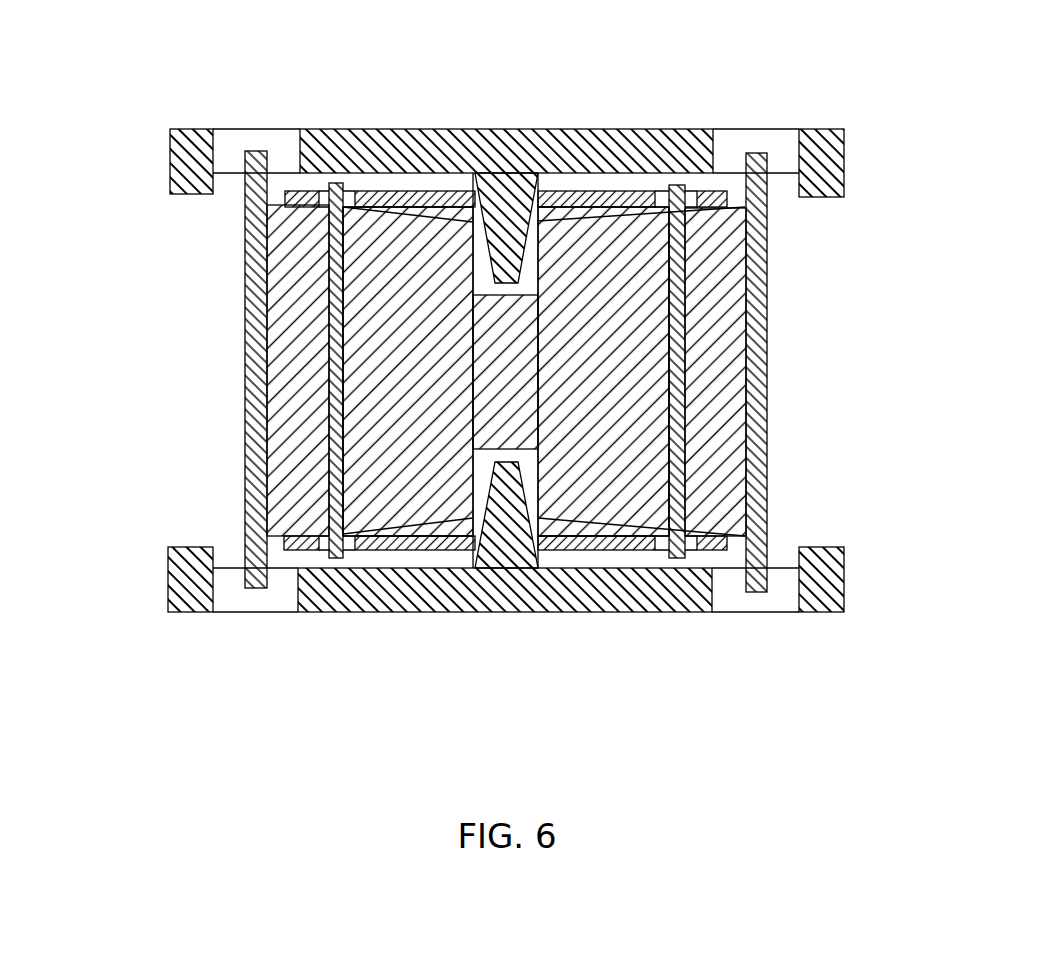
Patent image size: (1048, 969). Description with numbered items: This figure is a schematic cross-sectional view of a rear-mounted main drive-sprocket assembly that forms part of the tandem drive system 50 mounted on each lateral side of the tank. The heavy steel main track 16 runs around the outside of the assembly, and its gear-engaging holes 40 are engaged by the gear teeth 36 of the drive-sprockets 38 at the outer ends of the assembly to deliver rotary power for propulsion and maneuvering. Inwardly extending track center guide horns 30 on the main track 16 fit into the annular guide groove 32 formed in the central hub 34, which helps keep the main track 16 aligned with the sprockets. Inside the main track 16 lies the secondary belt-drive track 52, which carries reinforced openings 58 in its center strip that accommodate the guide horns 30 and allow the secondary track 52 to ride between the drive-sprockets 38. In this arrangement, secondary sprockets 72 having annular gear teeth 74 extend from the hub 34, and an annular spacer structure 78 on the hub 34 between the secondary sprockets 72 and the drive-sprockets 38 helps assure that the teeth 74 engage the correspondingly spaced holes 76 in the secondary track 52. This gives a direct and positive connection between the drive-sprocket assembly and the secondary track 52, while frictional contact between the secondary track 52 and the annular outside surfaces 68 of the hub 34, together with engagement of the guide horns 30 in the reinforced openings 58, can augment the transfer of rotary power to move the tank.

The main track 16 is at (460, 129).
The track center guide horns 30 is at (540, 262).
The annular guide groove 32 is at (545, 270).
The hub 34 is at (420, 398).
The gear teeth 36 is at (243, 158).
The drive-sprockets 38 is at (245, 345).
The holes 40 is at (275, 142).
The tandem drive system 50 is at (915, 322).
The secondary belt-drive track 52 is at (392, 215).
The reinforced openings 58 is at (475, 222).
The annular outside surfaces 68 is at (423, 200).
The secondary sprockets 72 is at (343, 325).
The annular gear teeth 74 is at (340, 183).
The holes 76 is at (350, 198).
The annular spacer structure 78 is at (298, 398).